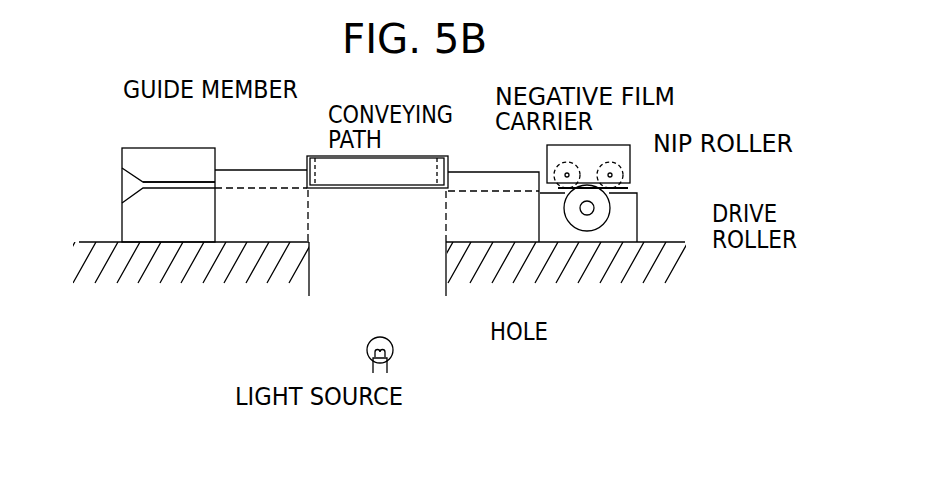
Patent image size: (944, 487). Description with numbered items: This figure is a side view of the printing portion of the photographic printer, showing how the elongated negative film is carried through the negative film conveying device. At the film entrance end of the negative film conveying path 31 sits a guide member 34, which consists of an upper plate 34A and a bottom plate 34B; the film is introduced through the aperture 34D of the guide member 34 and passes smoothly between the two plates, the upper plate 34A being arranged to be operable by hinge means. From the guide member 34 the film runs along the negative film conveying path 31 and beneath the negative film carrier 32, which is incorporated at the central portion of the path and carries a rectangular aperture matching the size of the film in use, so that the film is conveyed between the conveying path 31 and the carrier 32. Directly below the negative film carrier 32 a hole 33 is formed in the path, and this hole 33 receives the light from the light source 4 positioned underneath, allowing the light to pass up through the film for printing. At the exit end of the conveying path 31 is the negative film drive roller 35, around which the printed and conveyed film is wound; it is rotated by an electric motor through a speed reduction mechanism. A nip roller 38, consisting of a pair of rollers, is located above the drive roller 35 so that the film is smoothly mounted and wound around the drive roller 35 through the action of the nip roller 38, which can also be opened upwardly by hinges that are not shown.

The light source 4 is at (367, 347).
The negative film conveying path 31 is at (258, 188).
The negative film carrier 32 is at (423, 157).
The hole 33 is at (408, 278).
The guide member 34 is at (142, 172).
The upper plate 34A is at (147, 148).
The bottom plate 34B is at (122, 217).
The aperture 34D is at (127, 182).
The negative film drive roller 35 is at (612, 212).
The nip roller 38 is at (632, 172).